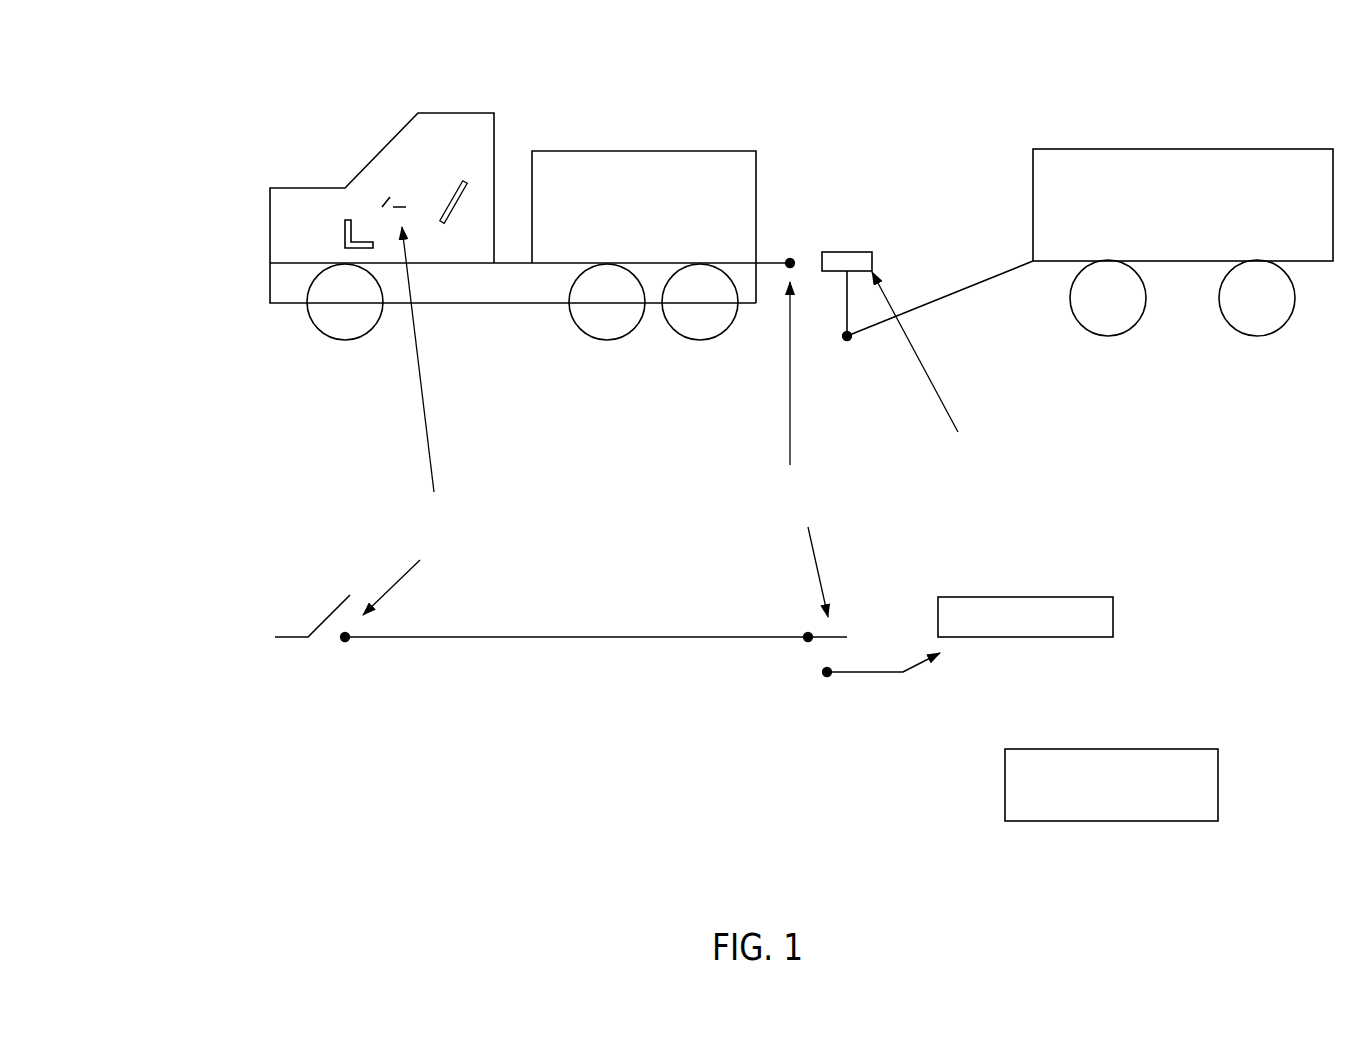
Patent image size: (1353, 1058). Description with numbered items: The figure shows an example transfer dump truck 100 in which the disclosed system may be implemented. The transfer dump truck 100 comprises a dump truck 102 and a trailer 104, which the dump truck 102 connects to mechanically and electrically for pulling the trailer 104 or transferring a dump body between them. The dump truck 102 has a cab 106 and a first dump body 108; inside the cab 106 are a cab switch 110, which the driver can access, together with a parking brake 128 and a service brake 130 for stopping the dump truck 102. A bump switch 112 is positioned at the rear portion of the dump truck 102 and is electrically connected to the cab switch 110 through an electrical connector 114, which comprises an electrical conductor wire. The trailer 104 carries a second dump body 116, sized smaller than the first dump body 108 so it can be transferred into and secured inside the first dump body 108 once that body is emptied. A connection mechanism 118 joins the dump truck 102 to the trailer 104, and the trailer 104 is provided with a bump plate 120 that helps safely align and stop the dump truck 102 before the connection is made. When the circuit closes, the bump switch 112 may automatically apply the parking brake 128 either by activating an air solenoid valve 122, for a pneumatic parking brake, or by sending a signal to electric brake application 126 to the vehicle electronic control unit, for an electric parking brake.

The transfer dump truck 100 is at (197, 112).
The dump truck 102 is at (528, 113).
The trailer 104 is at (1077, 113).
The cab 106 is at (472, 140).
The first dump body 108 is at (671, 215).
The cab switch 110 is at (386, 198).
The bump switch 112 is at (795, 250).
The electrical connector 114 is at (570, 625).
The second dump body 116 is at (1180, 215).
The connection mechanism 118 is at (943, 287).
The bump plate 120 is at (849, 242).
The air solenoid valve 122 is at (1047, 597).
The signal to electric brake application 126 is at (1153, 832).
The parking brake 128 is at (457, 203).
The service brake 130 is at (345, 232).